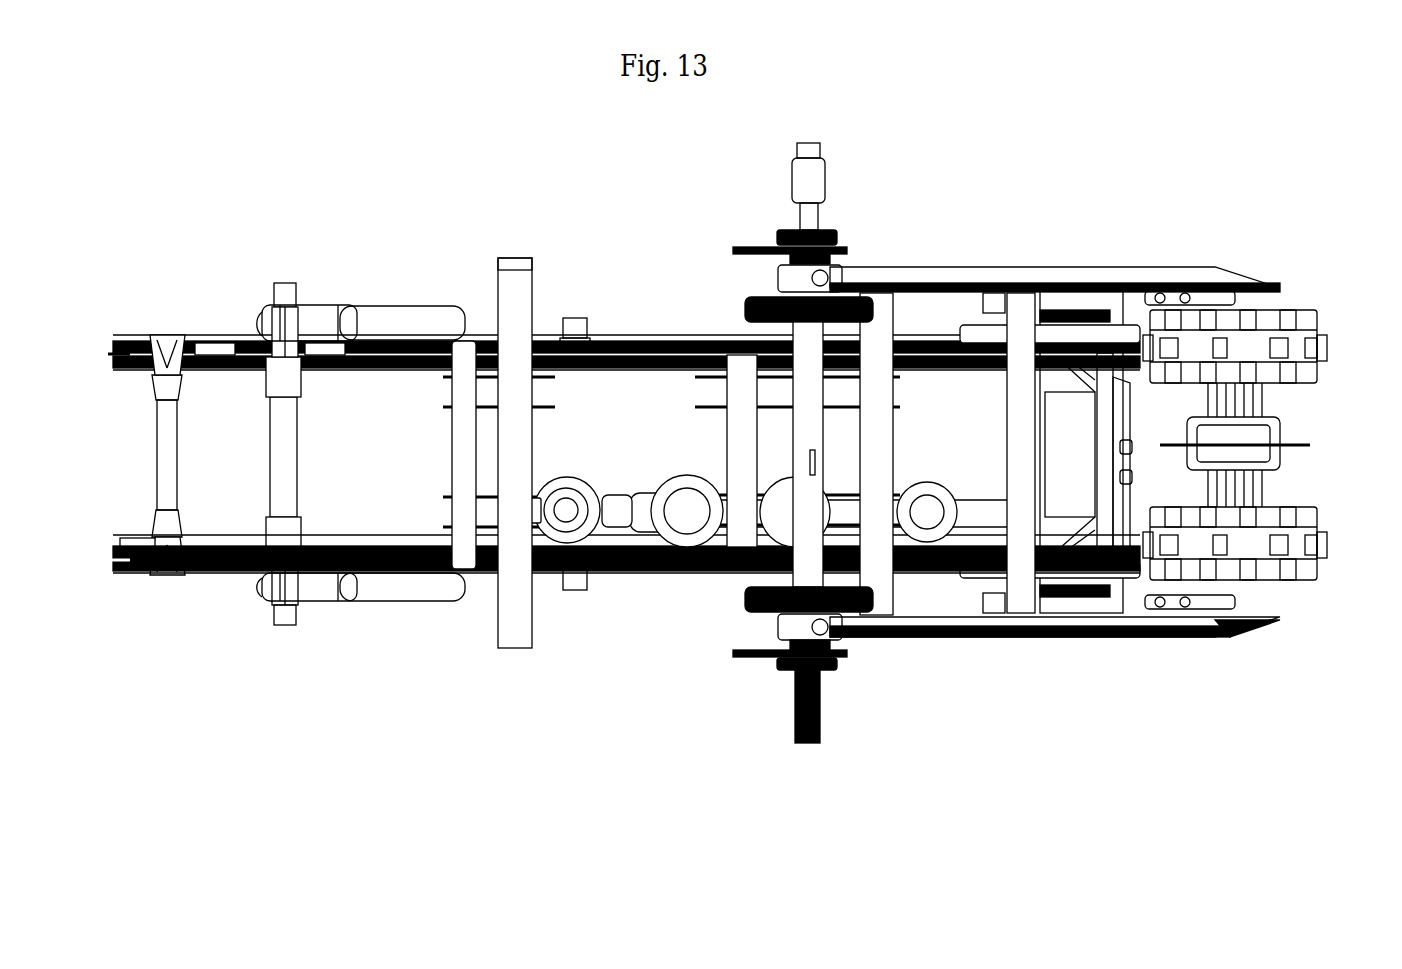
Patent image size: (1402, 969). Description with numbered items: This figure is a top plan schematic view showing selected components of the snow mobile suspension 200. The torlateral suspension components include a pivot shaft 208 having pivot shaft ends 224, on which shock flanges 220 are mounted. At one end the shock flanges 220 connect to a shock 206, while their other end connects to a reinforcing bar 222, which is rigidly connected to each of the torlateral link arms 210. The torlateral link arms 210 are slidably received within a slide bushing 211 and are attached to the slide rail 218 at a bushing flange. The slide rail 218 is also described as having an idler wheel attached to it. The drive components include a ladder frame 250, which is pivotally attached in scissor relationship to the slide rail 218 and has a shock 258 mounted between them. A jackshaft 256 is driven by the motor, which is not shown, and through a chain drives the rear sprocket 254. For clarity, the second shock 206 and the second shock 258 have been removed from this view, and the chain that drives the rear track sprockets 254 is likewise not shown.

The snow mobile suspension 200 is at (882, 138).
The shock 206 is at (655, 505).
The pivot shaft 208 is at (520, 295).
The torlateral link arms 210 is at (430, 332).
The slide bushing 211 is at (313, 325).
The slide rail 218 is at (678, 572).
The shock flanges 220 is at (447, 405).
The reinforcing bar 222 is at (460, 440).
The pivot shaft ends 224 is at (515, 262).
The ladder frame 250 is at (1012, 285).
The rear sprocket 254 is at (1290, 338).
The jackshaft 256 is at (822, 722).
The shock 258 is at (833, 512).